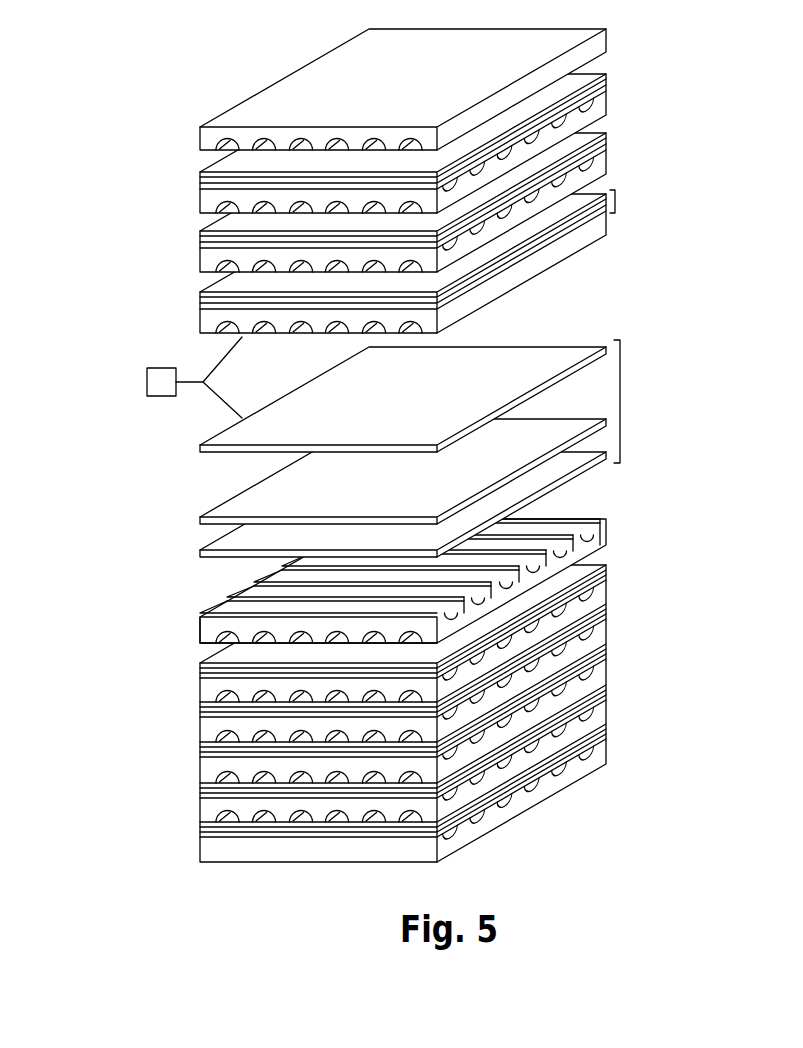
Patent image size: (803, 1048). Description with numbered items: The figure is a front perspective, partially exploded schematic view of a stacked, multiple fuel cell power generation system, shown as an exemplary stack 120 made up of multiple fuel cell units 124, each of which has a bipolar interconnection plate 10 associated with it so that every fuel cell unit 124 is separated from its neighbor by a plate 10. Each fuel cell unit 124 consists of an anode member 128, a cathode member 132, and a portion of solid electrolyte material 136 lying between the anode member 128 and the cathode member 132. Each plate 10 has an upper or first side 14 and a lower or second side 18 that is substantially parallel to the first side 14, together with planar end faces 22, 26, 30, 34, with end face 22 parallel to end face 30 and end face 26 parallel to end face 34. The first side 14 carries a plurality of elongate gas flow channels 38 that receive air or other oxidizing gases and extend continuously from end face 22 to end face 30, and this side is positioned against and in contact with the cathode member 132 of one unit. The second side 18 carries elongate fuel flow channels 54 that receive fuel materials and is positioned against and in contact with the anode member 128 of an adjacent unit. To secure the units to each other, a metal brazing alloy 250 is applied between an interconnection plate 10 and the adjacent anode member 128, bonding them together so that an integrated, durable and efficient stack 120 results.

The bipolar interconnection plate 10 is at (600, 227).
The first side 14 is at (573, 522).
The second side 18 is at (208, 339).
The end face 22 is at (605, 580).
The end face 26 is at (542, 518).
The end face 30 is at (237, 601).
The end face 34 is at (207, 630).
The gas flow channels 38 is at (588, 539).
The fuel flow channels 54 is at (222, 332).
The stack 120 is at (96, 529).
The fuel cell unit 124 is at (617, 207).
The anode member 128 is at (579, 318).
The cathode member 132 is at (199, 552).
The solid electrolyte material 136 is at (254, 497).
The brazing alloy 250 is at (162, 397).